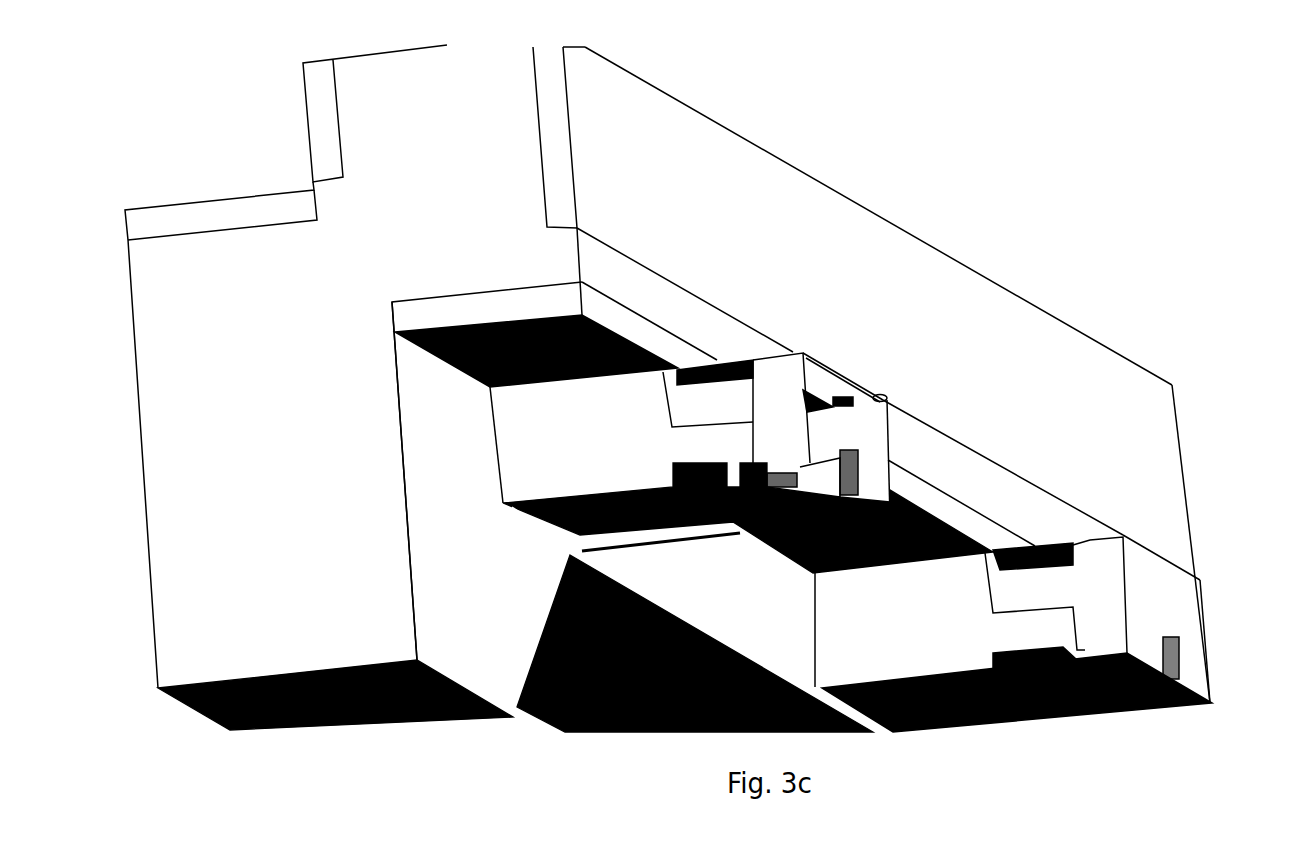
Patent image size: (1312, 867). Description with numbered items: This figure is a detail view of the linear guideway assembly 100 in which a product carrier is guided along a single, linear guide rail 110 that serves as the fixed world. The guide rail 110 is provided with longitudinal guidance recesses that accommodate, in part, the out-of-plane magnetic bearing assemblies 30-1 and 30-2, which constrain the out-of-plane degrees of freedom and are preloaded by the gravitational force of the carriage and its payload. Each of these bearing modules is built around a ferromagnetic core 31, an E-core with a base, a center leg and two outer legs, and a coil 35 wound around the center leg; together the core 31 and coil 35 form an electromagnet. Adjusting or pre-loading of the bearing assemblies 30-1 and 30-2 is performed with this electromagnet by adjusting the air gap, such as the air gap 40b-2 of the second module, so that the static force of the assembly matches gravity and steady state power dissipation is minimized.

The linear guidance assembly 100 is at (266, 140).
The linear guide rail 110 is at (500, 207).
The air gap 40b-2 is at (388, 330).
The ferromagnetic core 31 is at (512, 409).
The coil 35 is at (585, 437).
The magnetic bearing assembly 30-2 is at (778, 460).
The magnetic bearing assembly 30-1 is at (1102, 613).